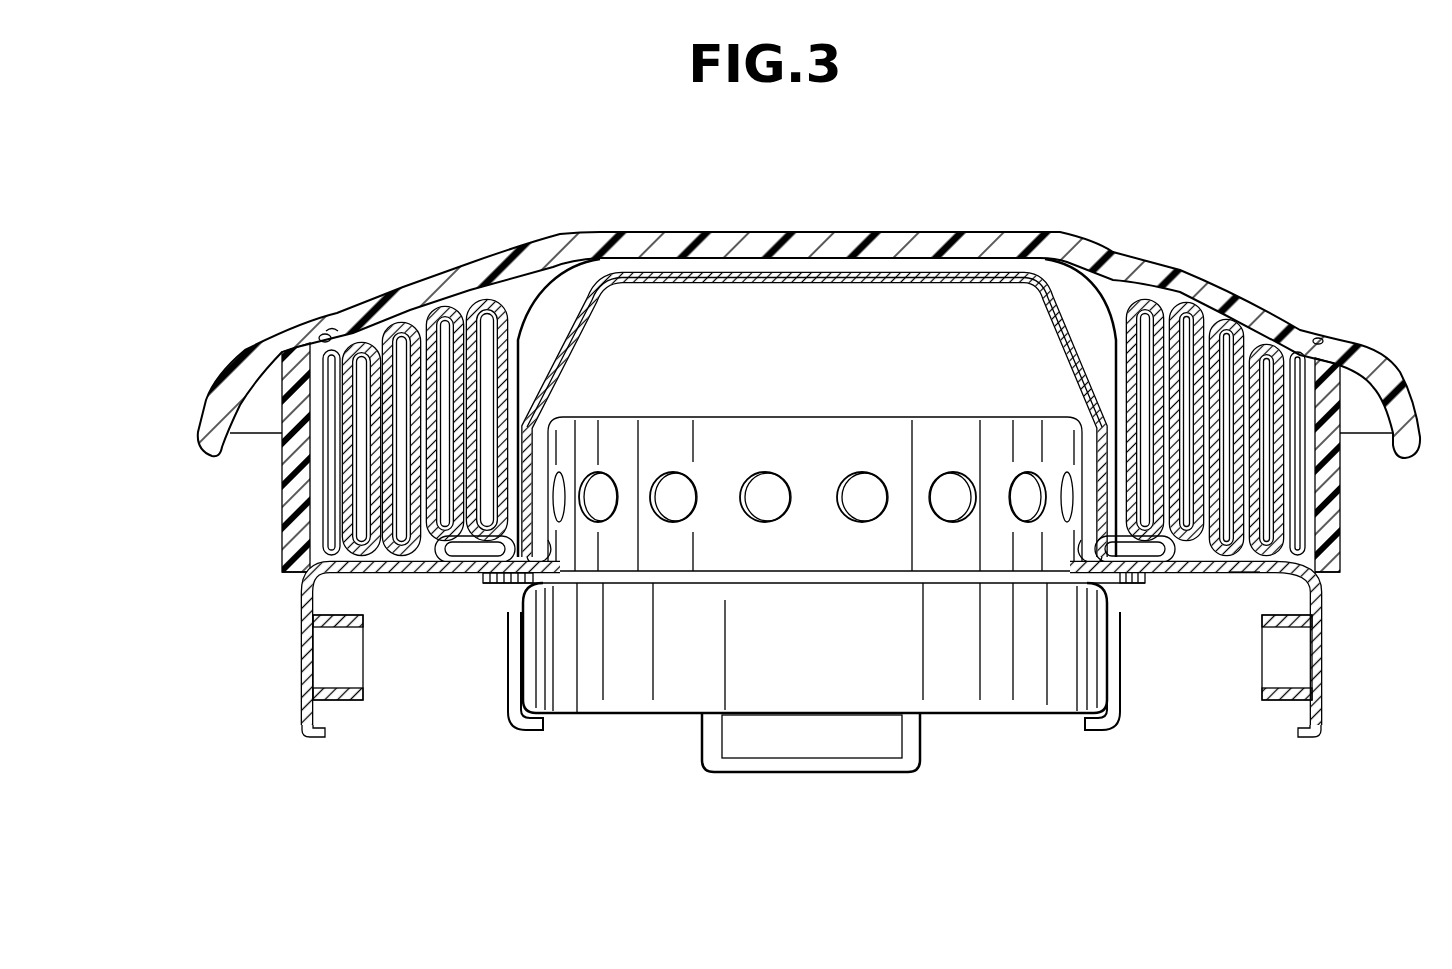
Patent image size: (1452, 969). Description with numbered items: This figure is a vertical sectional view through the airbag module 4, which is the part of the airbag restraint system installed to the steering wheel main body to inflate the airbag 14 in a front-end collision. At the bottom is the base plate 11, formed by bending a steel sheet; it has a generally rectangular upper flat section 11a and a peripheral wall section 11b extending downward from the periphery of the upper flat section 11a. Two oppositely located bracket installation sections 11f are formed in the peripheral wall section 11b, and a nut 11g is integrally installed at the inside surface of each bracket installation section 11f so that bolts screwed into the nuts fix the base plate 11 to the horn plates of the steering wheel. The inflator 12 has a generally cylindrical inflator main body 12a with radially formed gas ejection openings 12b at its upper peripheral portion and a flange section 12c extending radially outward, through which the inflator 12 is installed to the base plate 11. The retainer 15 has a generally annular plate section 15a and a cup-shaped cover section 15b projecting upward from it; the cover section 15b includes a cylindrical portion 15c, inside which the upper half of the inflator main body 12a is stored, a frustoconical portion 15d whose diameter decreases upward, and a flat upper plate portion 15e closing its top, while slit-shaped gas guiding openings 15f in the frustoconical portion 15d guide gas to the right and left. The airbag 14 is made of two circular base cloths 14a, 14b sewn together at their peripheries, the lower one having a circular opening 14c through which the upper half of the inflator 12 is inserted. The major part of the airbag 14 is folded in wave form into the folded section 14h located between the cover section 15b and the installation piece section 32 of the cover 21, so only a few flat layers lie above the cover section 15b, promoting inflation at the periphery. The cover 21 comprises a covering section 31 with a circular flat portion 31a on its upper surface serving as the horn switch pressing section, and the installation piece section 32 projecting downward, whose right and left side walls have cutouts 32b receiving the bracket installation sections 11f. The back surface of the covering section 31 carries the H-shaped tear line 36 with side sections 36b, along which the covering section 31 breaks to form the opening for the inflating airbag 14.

The airbag module 4 is at (1262, 170).
The covering section 31 is at (923, 234).
The circular flat portion 31a is at (828, 234).
The cover 21 is at (1283, 330).
The folded section 14h is at (327, 426).
The tear line 36 is at (323, 337).
The side section 36b is at (332, 330).
The installation piece section 32 is at (280, 493).
The cutout 32b is at (293, 578).
The airbag 14 is at (1195, 308).
The base cloth 14b is at (407, 310).
The retainer 15 is at (1062, 318).
The flat upper plate portion 15e is at (770, 278).
The frustoconical portion 15d is at (592, 310).
The cover section 15b is at (1058, 286).
The gas guiding opening 15f is at (570, 357).
The cylindrical portion 15c is at (540, 452).
The plate section 15a is at (1162, 577).
The inflator main body 12a is at (920, 437).
The gas ejection opening 12b is at (853, 490).
The flange section 12c is at (493, 583).
The inflator 12 is at (1007, 700).
The circular opening 14c is at (577, 707).
The base cloth 14a is at (390, 573).
The base plate 11 is at (1207, 577).
The bracket installation section 11f is at (298, 607).
The upper flat section 11a is at (1243, 577).
The peripheral wall section 11b is at (1323, 713).
The nut 11g is at (345, 700).